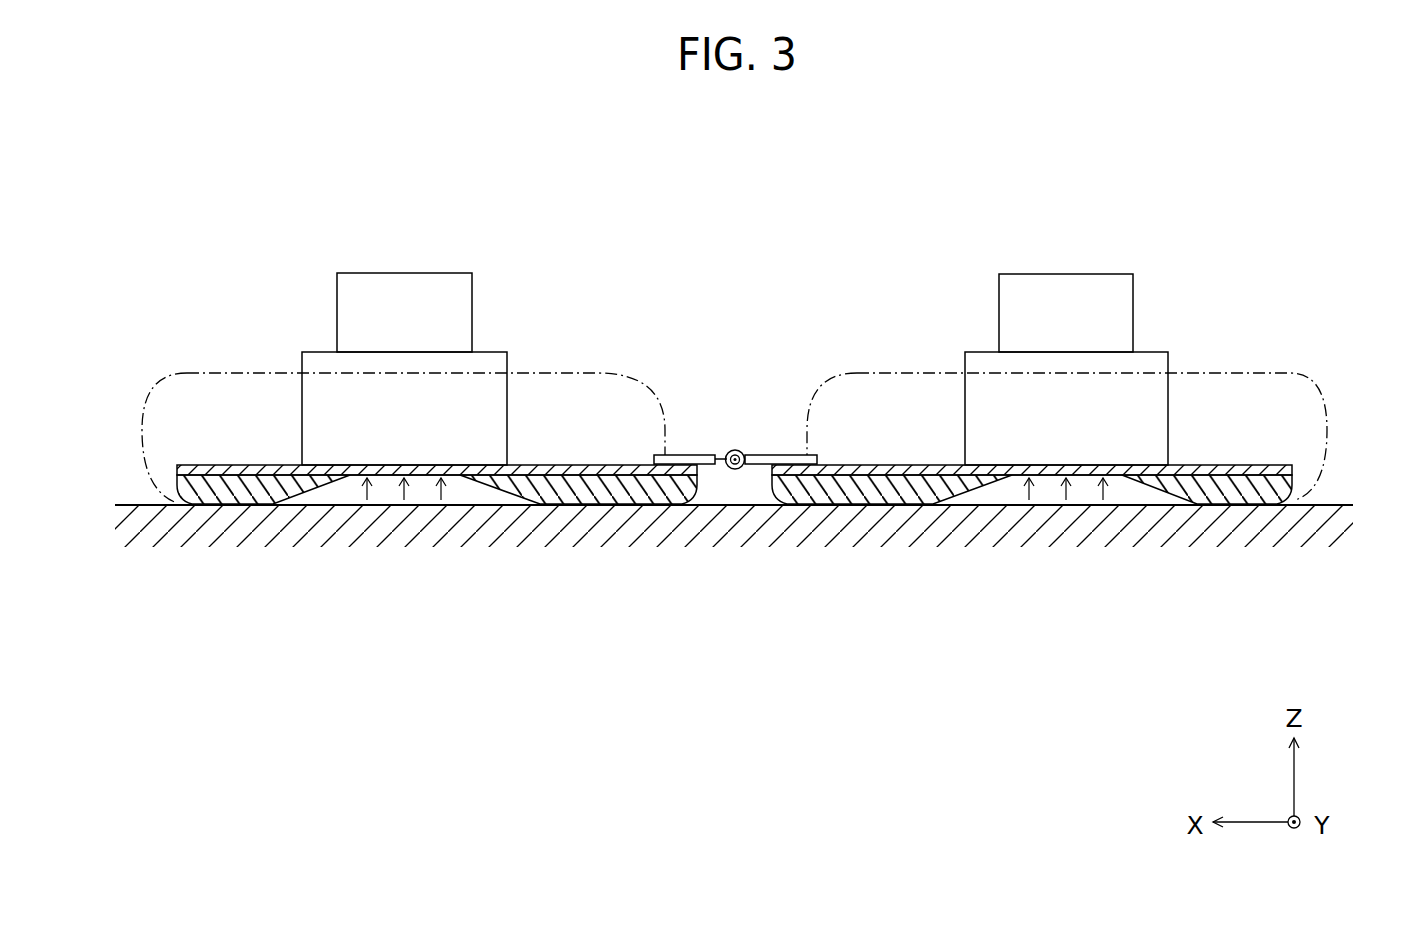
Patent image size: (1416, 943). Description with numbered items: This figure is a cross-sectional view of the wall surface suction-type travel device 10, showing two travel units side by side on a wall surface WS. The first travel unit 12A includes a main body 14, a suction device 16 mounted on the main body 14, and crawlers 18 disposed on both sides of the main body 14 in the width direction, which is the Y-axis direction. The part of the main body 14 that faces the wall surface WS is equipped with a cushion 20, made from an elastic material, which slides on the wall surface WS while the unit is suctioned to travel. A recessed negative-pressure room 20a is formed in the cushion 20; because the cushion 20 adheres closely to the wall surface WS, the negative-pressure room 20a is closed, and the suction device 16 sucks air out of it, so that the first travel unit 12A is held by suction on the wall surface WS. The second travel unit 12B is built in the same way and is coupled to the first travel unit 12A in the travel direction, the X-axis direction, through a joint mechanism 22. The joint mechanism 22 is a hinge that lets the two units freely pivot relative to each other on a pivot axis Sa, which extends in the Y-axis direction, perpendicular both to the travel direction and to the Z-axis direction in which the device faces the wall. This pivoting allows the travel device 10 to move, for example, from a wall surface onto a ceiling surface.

The wall surface suction-type travel device 10 is at (250, 198).
The first travel unit 12A is at (415, 246).
The second travel unit 12B is at (1076, 245).
The main body 14 is at (557, 465).
The suction device 16 is at (418, 430).
The crawlers 18 is at (587, 372).
The cushion 20 is at (590, 505).
The negative-pressure room 20a is at (417, 495).
The joint mechanism 22 is at (733, 451).
The pivot axis Sa is at (750, 456).
The wall surface WS is at (1338, 504).